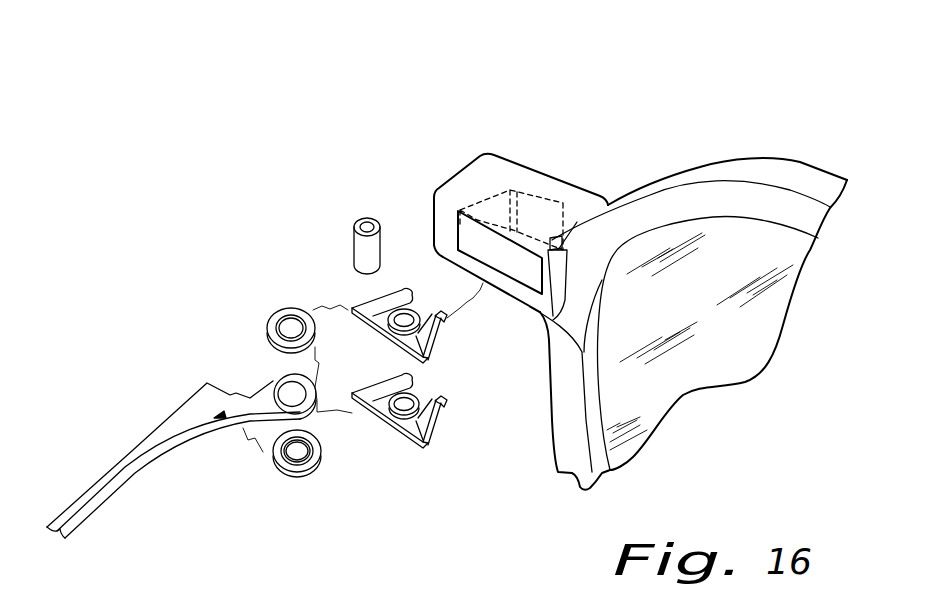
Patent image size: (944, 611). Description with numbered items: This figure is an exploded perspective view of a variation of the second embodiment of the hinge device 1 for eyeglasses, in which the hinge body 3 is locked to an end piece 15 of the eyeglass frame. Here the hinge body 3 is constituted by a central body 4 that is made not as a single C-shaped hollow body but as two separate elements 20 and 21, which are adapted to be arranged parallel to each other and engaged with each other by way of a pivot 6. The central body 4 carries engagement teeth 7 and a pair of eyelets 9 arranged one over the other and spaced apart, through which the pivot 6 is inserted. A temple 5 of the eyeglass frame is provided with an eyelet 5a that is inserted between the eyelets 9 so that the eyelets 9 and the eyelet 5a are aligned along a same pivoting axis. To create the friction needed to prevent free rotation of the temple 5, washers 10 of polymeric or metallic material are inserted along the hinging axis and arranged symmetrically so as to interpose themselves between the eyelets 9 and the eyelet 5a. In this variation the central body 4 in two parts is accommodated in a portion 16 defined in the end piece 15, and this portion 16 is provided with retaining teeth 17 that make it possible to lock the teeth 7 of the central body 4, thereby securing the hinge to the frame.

The hinge device 1 is at (387, 131).
The hinge body 3 is at (314, 287).
The central body 4 is at (398, 455).
The temple 5 is at (77, 503).
The eyelet 5a is at (277, 380).
The pivot 6 is at (367, 257).
The engagement teeth 7 is at (393, 295).
The eyelets 9 is at (403, 322).
The washers 10 is at (273, 320).
The end piece 15 is at (547, 225).
The portion 16 is at (503, 244).
The retaining teeth 17 is at (511, 188).
The separate element 20 is at (433, 347).
The separate element 21 is at (424, 443).